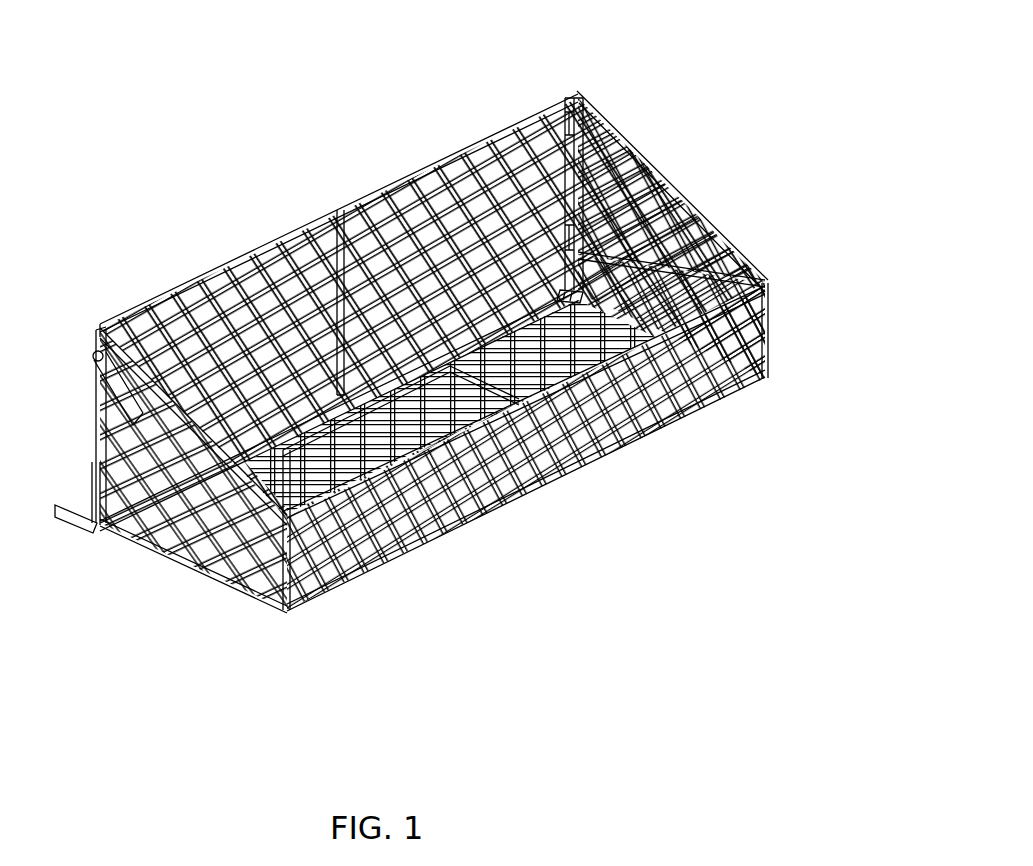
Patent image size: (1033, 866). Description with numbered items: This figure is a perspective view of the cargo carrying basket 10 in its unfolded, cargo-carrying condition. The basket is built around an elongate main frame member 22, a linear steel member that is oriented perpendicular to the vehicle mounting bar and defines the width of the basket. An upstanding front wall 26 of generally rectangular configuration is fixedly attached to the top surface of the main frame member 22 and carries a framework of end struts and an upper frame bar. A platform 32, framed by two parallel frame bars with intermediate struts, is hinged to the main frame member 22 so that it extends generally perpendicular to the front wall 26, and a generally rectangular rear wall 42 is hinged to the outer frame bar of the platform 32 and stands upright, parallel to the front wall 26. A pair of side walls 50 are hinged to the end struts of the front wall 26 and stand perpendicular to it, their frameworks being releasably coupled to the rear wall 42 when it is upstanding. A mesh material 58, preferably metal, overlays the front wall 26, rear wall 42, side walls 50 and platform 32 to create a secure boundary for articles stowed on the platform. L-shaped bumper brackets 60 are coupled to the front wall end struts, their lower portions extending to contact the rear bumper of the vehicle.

The cargo carrying basket 10 is at (253, 95).
The main frame member 22 is at (290, 428).
The front wall 26 is at (453, 137).
The platform 32 is at (400, 366).
The rear wall 42 is at (602, 447).
The side walls 50 is at (680, 160).
The mesh material 58 is at (487, 487).
The bumper brackets 60 is at (70, 516).